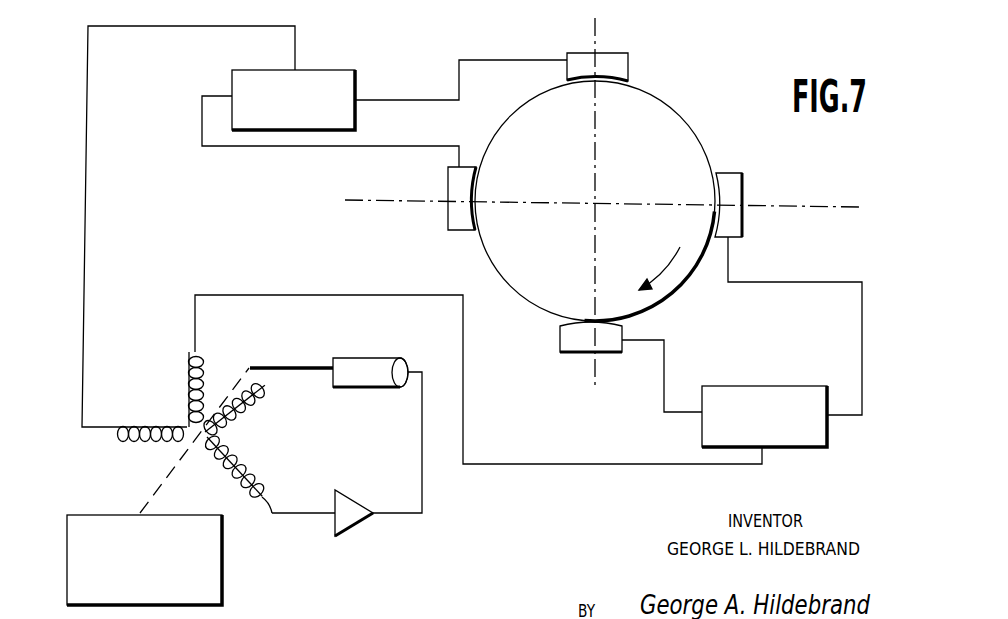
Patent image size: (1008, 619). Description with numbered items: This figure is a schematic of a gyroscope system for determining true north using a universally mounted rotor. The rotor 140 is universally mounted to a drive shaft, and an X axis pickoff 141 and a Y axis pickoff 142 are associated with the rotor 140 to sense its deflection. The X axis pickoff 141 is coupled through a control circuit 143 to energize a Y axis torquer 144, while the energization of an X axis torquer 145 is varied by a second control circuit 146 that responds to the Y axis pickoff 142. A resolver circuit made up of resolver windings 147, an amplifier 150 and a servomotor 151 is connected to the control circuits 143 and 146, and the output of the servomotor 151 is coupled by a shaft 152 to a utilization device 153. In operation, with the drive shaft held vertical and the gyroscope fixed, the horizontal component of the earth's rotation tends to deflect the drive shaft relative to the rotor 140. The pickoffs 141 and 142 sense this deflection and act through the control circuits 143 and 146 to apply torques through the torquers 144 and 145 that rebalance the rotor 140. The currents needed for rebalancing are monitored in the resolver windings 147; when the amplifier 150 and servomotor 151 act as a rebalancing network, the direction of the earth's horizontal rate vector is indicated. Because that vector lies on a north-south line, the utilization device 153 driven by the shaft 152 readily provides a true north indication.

The rotor 140 is at (650, 151).
The X axis pickoff 141 is at (575, 53).
The Y axis pickoff 142 is at (736, 173).
The control circuit 143 is at (341, 70).
The Y axis torquer 144 is at (465, 236).
The X axis torquer 145 is at (560, 339).
The control circuit 146 is at (745, 386).
The resolver windings 147 is at (183, 405).
The amplifier 150 is at (359, 504).
The servomotor 151 is at (392, 348).
The shaft 152 is at (295, 364).
The utilization device 153 is at (222, 582).